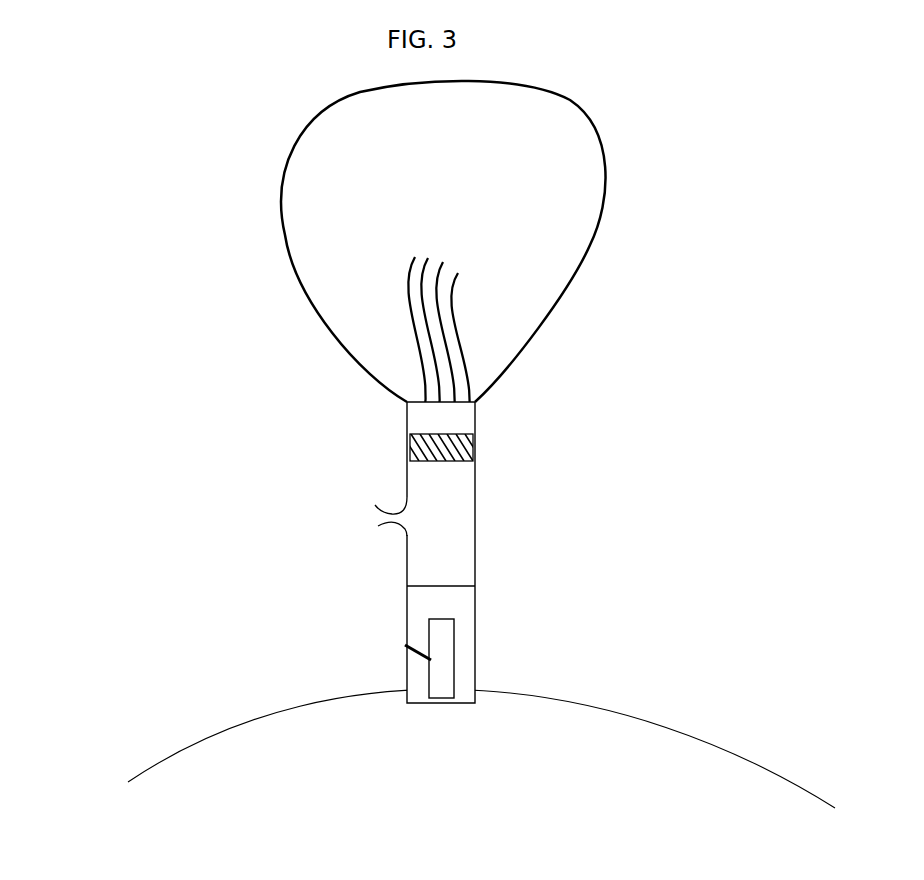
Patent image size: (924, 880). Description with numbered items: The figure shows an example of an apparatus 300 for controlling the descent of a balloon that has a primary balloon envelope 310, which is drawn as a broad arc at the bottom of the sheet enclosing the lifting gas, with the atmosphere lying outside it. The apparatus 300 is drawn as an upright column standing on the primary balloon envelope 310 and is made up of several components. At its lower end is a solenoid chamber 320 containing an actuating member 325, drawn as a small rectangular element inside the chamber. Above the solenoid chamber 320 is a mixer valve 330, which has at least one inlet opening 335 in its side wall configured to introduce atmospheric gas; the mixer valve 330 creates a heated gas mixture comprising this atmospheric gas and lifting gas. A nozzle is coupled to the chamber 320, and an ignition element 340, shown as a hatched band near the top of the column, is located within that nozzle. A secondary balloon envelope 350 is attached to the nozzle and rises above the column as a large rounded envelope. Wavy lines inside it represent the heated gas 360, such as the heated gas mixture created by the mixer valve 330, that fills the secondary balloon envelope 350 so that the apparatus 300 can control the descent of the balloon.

The apparatus 300 is at (899, 53).
The primary balloon envelope 310 is at (580, 703).
The solenoid chamber 320 is at (409, 626).
The actuating member 325 is at (452, 658).
The mixer valve 330 is at (407, 551).
The inlet opening 335 is at (385, 524).
The ignition element 340 is at (443, 448).
The secondary balloon envelope 350 is at (554, 330).
The heated gas 360 is at (460, 257).